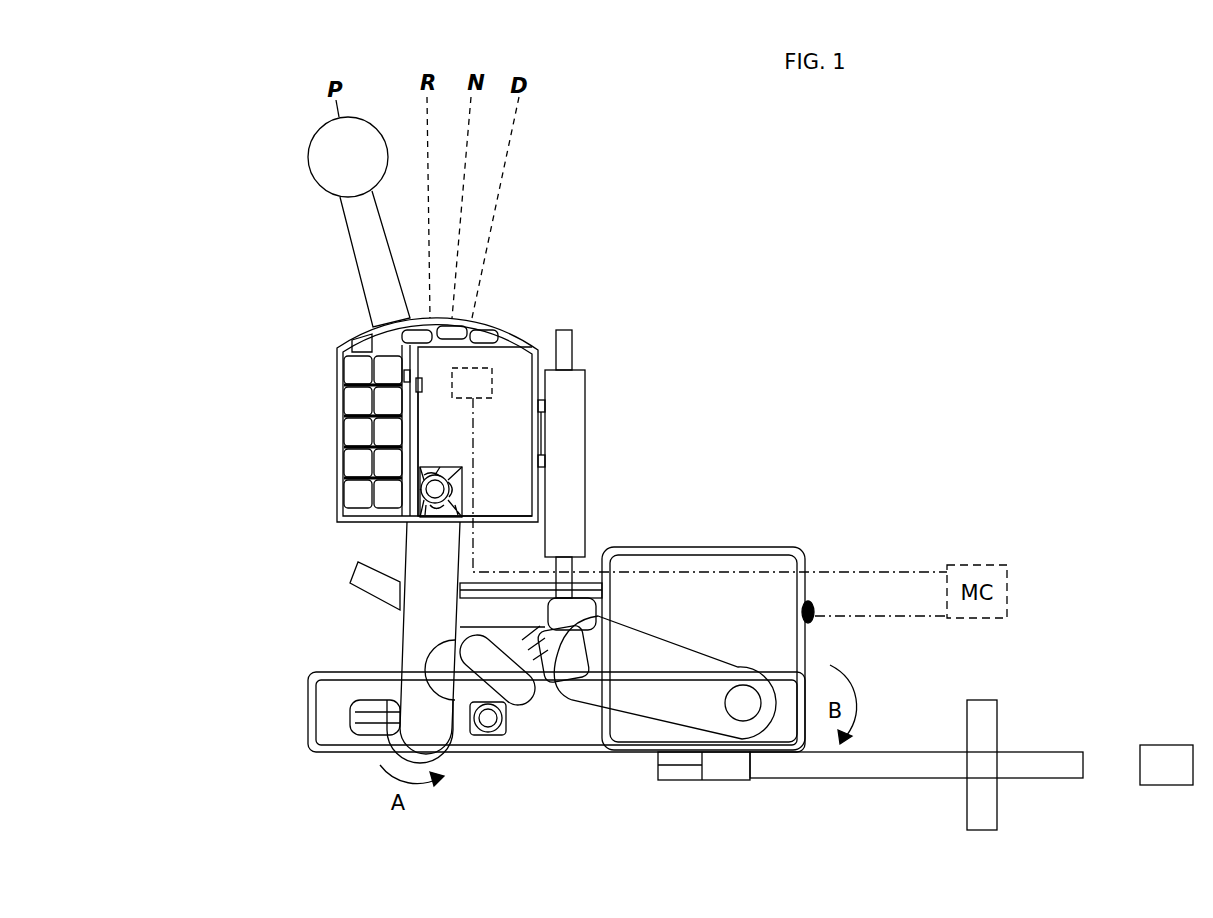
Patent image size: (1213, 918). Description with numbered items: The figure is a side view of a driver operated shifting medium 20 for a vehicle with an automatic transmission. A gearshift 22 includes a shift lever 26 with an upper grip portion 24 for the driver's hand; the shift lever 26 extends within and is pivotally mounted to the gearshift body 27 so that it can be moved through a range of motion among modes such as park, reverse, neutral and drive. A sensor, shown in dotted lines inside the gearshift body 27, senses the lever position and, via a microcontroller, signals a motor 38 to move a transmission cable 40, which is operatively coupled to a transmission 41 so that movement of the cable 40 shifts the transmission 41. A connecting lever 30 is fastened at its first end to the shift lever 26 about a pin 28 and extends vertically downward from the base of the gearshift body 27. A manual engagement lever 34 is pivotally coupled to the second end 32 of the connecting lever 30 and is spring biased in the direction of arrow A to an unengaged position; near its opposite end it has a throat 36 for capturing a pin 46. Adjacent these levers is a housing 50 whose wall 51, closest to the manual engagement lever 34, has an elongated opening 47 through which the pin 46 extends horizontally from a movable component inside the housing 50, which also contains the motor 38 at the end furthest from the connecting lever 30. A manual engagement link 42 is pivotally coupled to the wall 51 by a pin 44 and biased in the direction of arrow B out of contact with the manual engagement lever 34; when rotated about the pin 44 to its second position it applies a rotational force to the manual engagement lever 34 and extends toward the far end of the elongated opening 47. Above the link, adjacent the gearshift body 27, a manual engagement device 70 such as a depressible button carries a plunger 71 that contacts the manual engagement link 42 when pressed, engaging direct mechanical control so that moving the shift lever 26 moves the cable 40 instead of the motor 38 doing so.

The shifting medium 20 is at (960, 457).
The gearshift 22 is at (196, 207).
The upper grip portion 24 is at (335, 159).
The shift lever 26 is at (365, 243).
The gearshift body 27 is at (360, 398).
The pin 28 is at (430, 490).
The connecting lever 30 is at (420, 625).
The second end 32 is at (420, 732).
The manual engagement lever 34 is at (515, 680).
The throat 36 is at (455, 668).
The motor 38 is at (643, 585).
The transmission cable 40 is at (858, 765).
The transmission 41 is at (1167, 745).
The manual engagement link 42 is at (594, 680).
The pin 44 is at (745, 703).
The pin 46 is at (485, 730).
The elongated opening 47 is at (350, 718).
The housing 50 is at (742, 500).
The wall 51 is at (558, 730).
The manual engagement device 70 is at (570, 383).
The plunger 71 is at (568, 578).